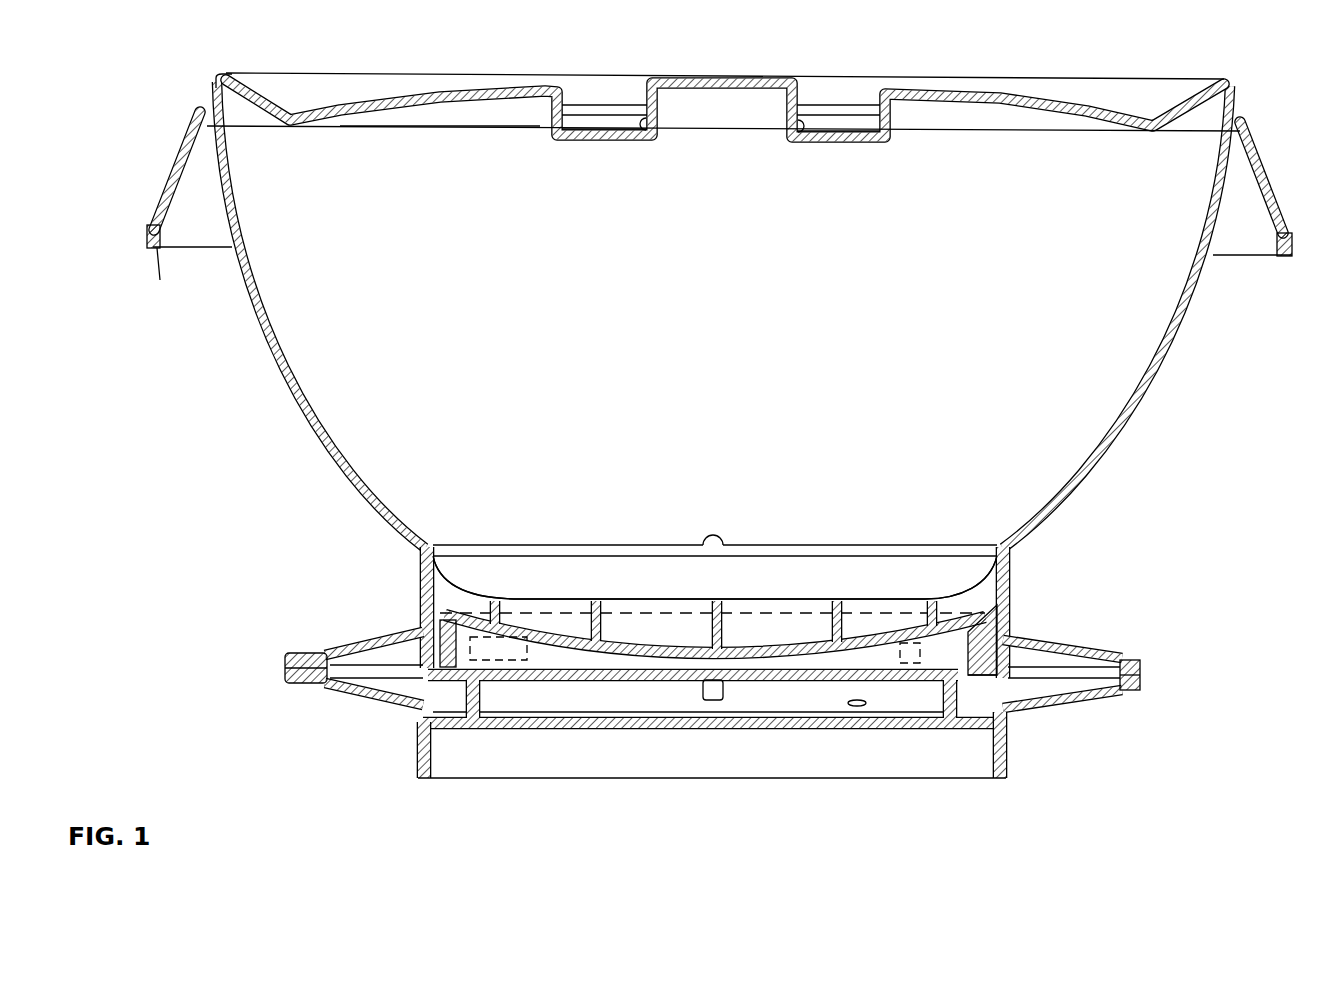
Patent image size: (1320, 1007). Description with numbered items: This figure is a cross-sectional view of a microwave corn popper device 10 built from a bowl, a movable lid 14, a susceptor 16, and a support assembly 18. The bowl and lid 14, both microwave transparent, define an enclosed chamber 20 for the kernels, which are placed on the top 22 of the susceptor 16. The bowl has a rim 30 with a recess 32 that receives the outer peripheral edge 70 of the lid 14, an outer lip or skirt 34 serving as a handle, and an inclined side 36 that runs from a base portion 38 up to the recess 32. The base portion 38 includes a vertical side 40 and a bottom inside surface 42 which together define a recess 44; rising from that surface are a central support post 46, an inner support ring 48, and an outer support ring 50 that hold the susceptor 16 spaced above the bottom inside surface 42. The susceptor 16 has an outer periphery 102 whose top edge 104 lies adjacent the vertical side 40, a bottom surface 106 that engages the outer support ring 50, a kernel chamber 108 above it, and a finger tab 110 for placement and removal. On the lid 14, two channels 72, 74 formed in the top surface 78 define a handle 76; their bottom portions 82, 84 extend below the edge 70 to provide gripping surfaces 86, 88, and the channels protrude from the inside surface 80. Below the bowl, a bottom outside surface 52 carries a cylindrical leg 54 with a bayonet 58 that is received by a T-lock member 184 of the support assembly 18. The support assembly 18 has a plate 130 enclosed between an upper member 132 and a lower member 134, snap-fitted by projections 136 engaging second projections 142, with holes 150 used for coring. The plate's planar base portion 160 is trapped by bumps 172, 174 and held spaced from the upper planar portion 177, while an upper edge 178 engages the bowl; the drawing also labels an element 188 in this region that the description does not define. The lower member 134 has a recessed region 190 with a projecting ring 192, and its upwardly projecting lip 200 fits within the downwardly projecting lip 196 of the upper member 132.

The microwave corn popper device 10 is at (1138, 540).
The movable lid 14 is at (1007, 78).
The susceptor 16 is at (905, 548).
The support assembly 18 is at (1068, 645).
The enclosed chamber 20 is at (668, 322).
The top of susceptor 22 is at (880, 600).
The rim 30 is at (1245, 120).
The recess 32 is at (250, 82).
The outer lip or skirt 34 is at (157, 250).
The inclined side 36 is at (330, 433).
The base portion 38 is at (425, 553).
The vertical side 40 is at (1010, 567).
The bottom inside surface 42 is at (645, 660).
The recess 44 is at (452, 587).
The central support post 46 is at (760, 605).
The first, inner support ring 48 is at (587, 625).
The second, outer support ring 50 is at (510, 590).
The bottom outside surface 52 is at (625, 725).
The cylindrical leg 54 is at (510, 730).
The bayonet 58 is at (425, 618).
The outer peripheral edge 70 is at (1000, 132).
The channel 72 is at (573, 92).
The channel 74 is at (857, 92).
The handle 76 is at (700, 80).
The top surface 78 is at (387, 88).
The inside surface 80 is at (405, 128).
The bottom portion 82 is at (568, 145).
The bottom portion 84 is at (865, 142).
The gripping surface 86 is at (640, 127).
The gripping surface 88 is at (805, 130).
The outer periphery 102 is at (437, 556).
The top edge 104 is at (940, 548).
The bottom surface 106 is at (720, 625).
The kernel chamber 108 is at (728, 587).
The finger tab 110 is at (716, 538).
The plate 130 is at (900, 712).
The upper member 132 is at (300, 668).
The lower member 134 is at (350, 692).
The projections 136 is at (473, 740).
The second projections 142 is at (440, 725).
The holes of upper member / chamber 150 is at (375, 710).
The planar base portion 160 is at (640, 705).
The bumps 172 is at (310, 655).
The bumps 174 is at (325, 685).
The upper planar portion 177 is at (835, 730).
The upper edge 178 is at (1010, 626).
The T-lock members 184 is at (547, 600).
The upper plate 188 is at (880, 720).
The recessed region 190 is at (797, 728).
The projecting ring 192 is at (1008, 780).
The circular lip 196 is at (1142, 673).
The circular lip 200 is at (1132, 662).